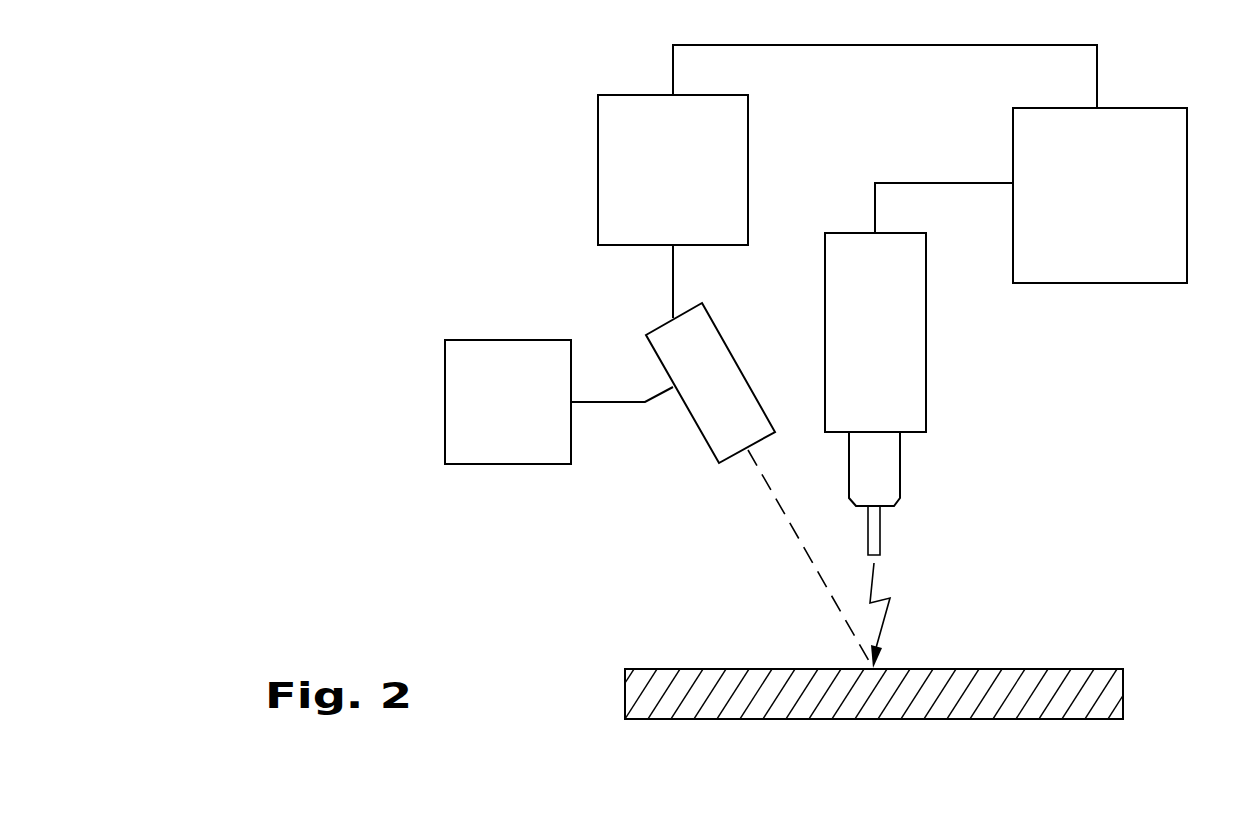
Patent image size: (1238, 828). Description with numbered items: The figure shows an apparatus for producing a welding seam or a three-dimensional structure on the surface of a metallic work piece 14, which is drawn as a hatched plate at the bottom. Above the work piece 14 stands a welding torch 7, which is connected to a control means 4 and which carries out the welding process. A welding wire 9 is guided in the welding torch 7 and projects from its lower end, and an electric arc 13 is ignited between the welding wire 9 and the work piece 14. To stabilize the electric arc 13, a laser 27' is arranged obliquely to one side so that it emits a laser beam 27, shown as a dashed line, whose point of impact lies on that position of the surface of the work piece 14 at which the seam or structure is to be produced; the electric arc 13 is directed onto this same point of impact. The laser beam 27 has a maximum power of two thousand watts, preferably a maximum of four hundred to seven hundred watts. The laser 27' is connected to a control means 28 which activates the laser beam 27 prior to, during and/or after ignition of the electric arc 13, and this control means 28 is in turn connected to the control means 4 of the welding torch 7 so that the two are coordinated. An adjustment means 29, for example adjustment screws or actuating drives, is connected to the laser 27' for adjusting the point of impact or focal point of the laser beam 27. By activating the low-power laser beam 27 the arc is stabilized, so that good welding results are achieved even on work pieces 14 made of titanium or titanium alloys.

The control means 4 is at (1100, 195).
The welding torch 7 is at (875, 369).
The welding wire 9 is at (887, 530).
The electric arc 13 is at (898, 623).
The work piece 14 is at (1126, 692).
The laser beam 27 is at (789, 559).
The laser 27' is at (710, 383).
The control means of the laser 28 is at (673, 170).
The adjustment means 29 is at (508, 402).